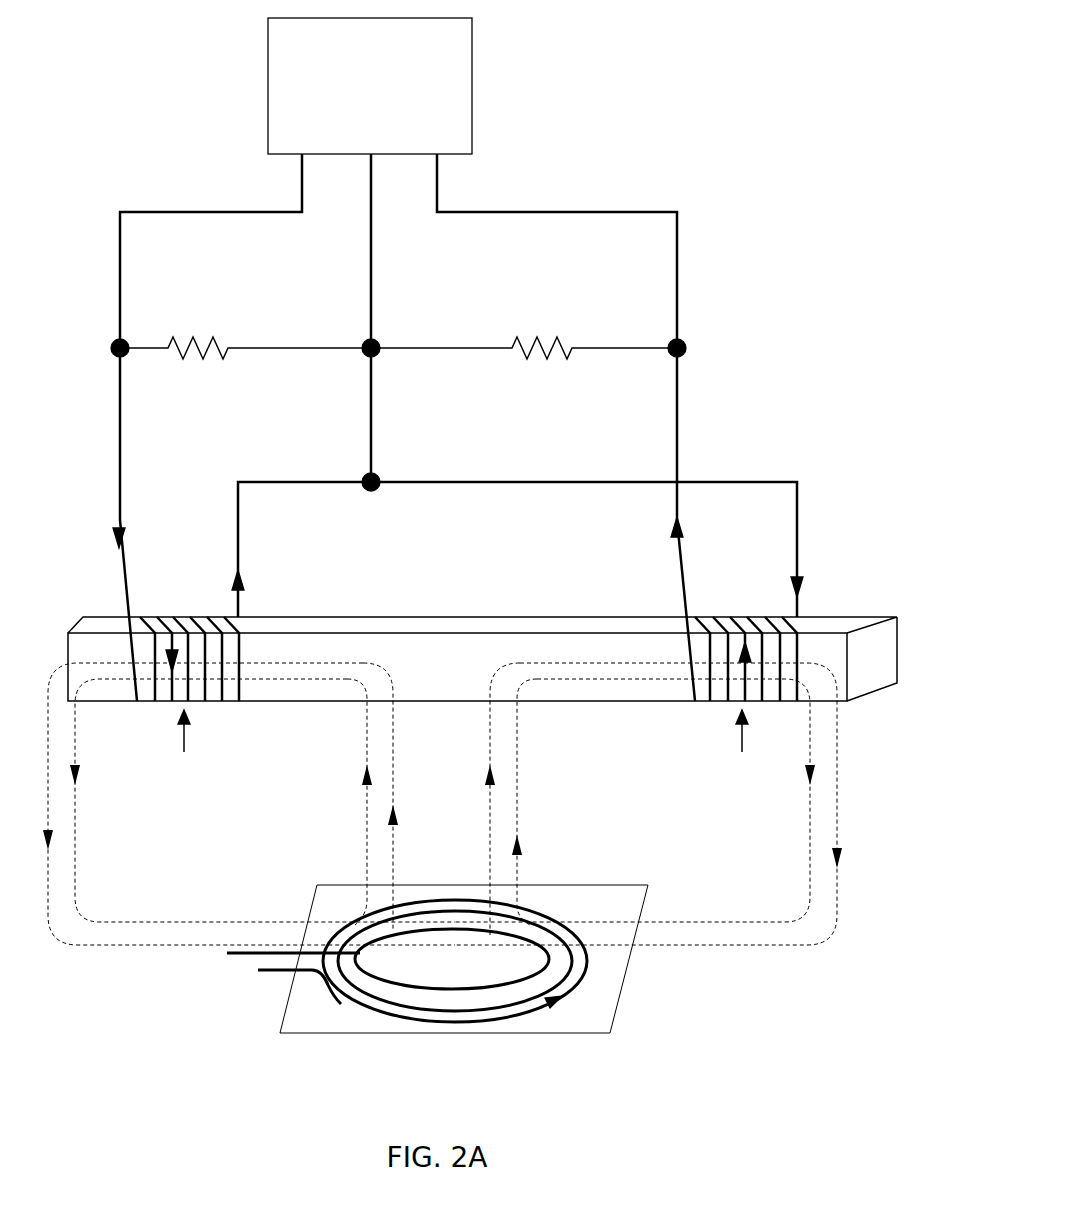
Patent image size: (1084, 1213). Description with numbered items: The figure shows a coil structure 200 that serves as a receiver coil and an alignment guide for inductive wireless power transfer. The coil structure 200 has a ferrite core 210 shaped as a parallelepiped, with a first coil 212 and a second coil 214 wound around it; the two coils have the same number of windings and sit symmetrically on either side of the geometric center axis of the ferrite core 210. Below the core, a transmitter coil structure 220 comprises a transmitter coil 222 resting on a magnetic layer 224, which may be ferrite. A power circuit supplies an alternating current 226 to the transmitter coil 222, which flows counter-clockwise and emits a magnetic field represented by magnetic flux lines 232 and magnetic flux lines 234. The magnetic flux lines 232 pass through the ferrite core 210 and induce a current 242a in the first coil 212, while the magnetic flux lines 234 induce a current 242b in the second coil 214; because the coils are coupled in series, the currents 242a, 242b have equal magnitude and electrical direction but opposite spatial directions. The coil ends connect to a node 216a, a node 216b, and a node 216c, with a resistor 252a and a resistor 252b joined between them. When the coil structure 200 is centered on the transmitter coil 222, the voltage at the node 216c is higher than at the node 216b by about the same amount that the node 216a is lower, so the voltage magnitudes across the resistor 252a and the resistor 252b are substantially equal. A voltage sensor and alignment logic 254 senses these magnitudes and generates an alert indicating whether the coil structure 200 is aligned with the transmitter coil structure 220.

The coil structure 200 is at (514, 618).
The ferrite core 210 is at (352, 617).
The first coil 212 is at (184, 744).
The second coil 214 is at (741, 744).
The node 216a is at (111, 348).
The node 216b is at (378, 345).
The node 216c is at (686, 345).
The transmitter coil structure 220 is at (425, 1009).
The transmitter coil 222 is at (345, 1000).
The magnetic layer 224 is at (398, 1030).
The alternating current 226 is at (513, 1013).
The magnetic flux lines 232 is at (98, 945).
The magnetic flux lines 234 is at (717, 945).
The current 242a is at (238, 572).
The current 242b is at (797, 590).
The resistor 252a is at (193, 337).
The resistor 252b is at (540, 337).
The voltage sensor and alignment logic 254 is at (472, 114).